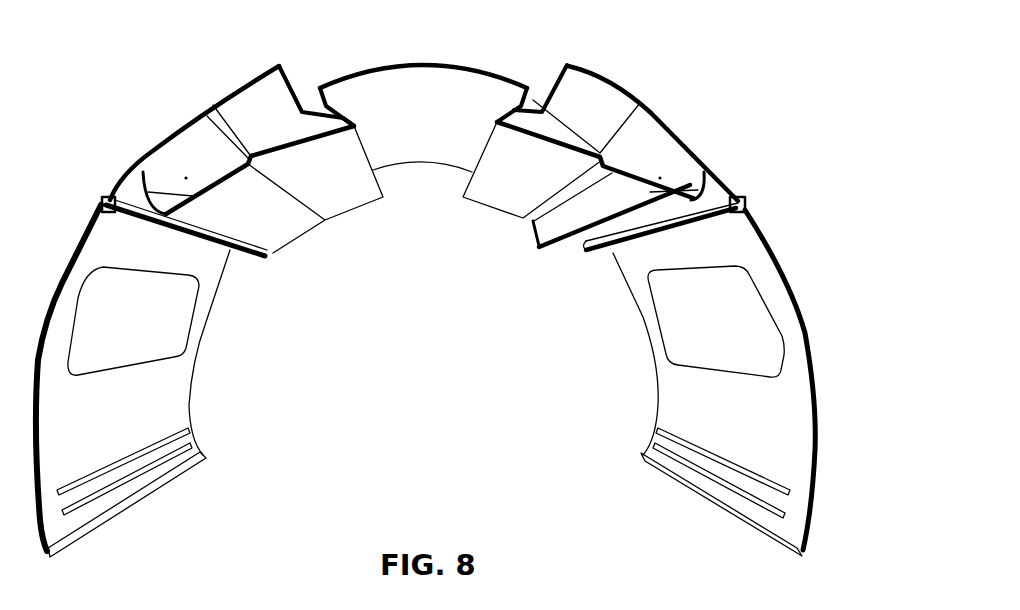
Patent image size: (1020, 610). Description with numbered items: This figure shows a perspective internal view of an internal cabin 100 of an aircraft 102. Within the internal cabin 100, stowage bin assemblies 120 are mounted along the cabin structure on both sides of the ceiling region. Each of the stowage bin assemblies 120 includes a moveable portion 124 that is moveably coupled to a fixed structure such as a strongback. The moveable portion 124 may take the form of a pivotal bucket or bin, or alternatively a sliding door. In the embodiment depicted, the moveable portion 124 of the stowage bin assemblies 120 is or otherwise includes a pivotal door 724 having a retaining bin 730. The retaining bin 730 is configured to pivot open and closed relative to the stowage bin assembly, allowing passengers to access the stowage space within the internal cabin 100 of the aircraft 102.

The internal cabin 100 is at (475, 311).
The aircraft 102 is at (769, 182).
The stowage bin assembly 120 is at (445, 194).
The moveable portion 124 is at (563, 243).
The pivotal door 724 is at (314, 229).
The retaining bin 730 is at (621, 197).